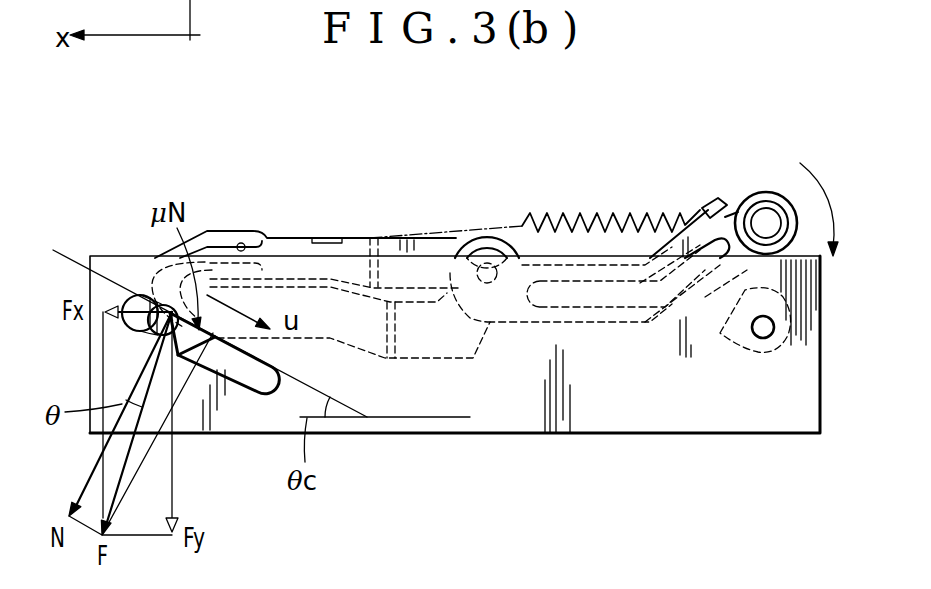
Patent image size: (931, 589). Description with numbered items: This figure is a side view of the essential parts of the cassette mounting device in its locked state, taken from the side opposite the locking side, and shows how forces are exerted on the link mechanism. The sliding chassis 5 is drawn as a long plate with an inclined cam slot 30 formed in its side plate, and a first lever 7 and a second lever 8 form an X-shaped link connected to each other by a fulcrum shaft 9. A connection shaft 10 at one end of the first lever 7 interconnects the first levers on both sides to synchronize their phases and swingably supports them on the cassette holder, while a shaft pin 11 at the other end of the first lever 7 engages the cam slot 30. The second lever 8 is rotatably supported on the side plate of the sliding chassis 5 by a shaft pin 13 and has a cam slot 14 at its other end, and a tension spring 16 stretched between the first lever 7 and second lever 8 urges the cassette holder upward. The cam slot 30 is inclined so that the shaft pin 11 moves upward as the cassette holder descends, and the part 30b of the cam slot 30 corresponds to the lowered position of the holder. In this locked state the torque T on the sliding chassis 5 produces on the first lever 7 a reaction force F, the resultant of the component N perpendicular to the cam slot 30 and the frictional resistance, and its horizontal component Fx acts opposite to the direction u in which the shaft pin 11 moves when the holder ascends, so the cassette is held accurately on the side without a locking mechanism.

The sliding chassis 5 is at (628, 420).
The first lever 7 is at (432, 353).
The second lever 8 is at (289, 250).
The fulcrum shaft 9 is at (487, 270).
The connection shaft 10 is at (764, 220).
The shaft pin 11 is at (153, 327).
The shaft pin 13 is at (774, 326).
The cam slot 14 is at (241, 243).
The tension spring 16 is at (601, 216).
The cam slot 30 is at (256, 386).
The part of cam slot 30b is at (155, 350).